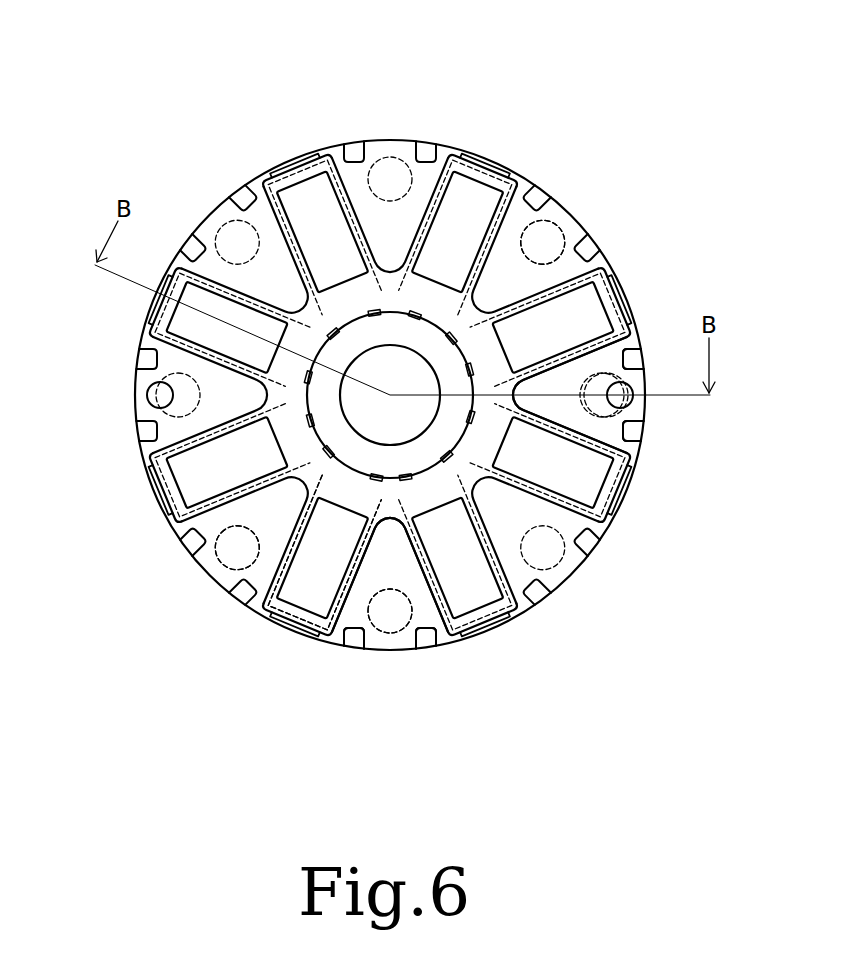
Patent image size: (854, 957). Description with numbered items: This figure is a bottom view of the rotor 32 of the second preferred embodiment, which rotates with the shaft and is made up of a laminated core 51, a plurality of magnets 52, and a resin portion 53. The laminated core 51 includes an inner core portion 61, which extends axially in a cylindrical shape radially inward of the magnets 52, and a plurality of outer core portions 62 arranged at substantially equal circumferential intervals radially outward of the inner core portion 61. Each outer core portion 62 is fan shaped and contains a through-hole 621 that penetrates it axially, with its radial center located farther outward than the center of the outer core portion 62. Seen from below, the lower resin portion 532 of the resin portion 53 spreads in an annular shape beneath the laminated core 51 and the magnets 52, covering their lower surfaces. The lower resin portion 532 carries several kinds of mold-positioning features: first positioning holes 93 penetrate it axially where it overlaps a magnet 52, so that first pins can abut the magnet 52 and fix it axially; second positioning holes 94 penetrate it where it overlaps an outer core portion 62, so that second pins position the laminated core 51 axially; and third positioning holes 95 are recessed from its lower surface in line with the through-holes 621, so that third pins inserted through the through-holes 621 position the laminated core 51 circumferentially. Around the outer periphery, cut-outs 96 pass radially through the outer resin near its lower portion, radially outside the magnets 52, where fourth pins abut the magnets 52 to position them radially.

The rotor 32 is at (333, 105).
The resin portion 53 is at (462, 138).
The first positioning hole 93 is at (310, 207).
The through-hole 621 is at (548, 235).
The third positioning hole 95 is at (160, 395).
The inner core portion 61 is at (447, 417).
The outer core portion 62 is at (605, 523).
The laminated core 51 is at (712, 448).
The lower resin portion 532 is at (248, 528).
The cut-out 96 is at (292, 632).
The second positioning hole 94 is at (428, 642).
The magnet 52 is at (470, 580).